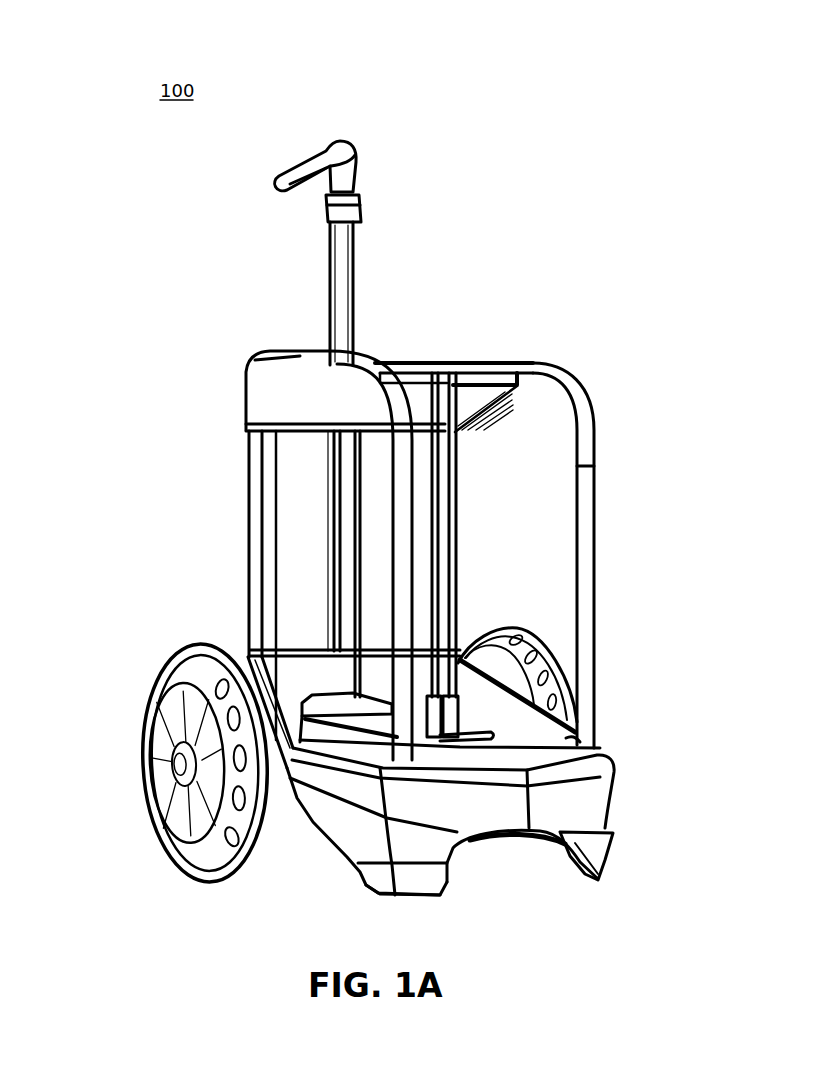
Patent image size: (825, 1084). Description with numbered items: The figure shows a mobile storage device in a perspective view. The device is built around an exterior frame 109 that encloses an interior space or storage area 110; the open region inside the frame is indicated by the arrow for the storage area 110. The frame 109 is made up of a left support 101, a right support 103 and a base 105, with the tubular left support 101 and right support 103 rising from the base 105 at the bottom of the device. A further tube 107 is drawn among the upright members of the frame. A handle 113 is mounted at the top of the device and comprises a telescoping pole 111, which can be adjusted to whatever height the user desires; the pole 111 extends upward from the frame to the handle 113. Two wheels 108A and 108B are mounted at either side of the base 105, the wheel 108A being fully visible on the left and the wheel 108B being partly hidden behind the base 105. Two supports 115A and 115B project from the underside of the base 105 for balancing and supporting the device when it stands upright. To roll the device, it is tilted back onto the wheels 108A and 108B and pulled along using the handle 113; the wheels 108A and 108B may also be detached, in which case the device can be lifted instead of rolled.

The left support 101 is at (363, 524).
The right support 103 is at (590, 593).
The base 105 is at (340, 822).
The rear tube of frame 107 is at (456, 548).
The wheel 108A is at (176, 870).
The wheel 108B is at (560, 706).
The exterior frame 109 is at (460, 378).
The interior space / storage area 110 is at (523, 445).
The telescoping pole 111 is at (345, 292).
The handle 113 is at (358, 157).
The support 115A is at (448, 885).
The support 115B is at (570, 856).